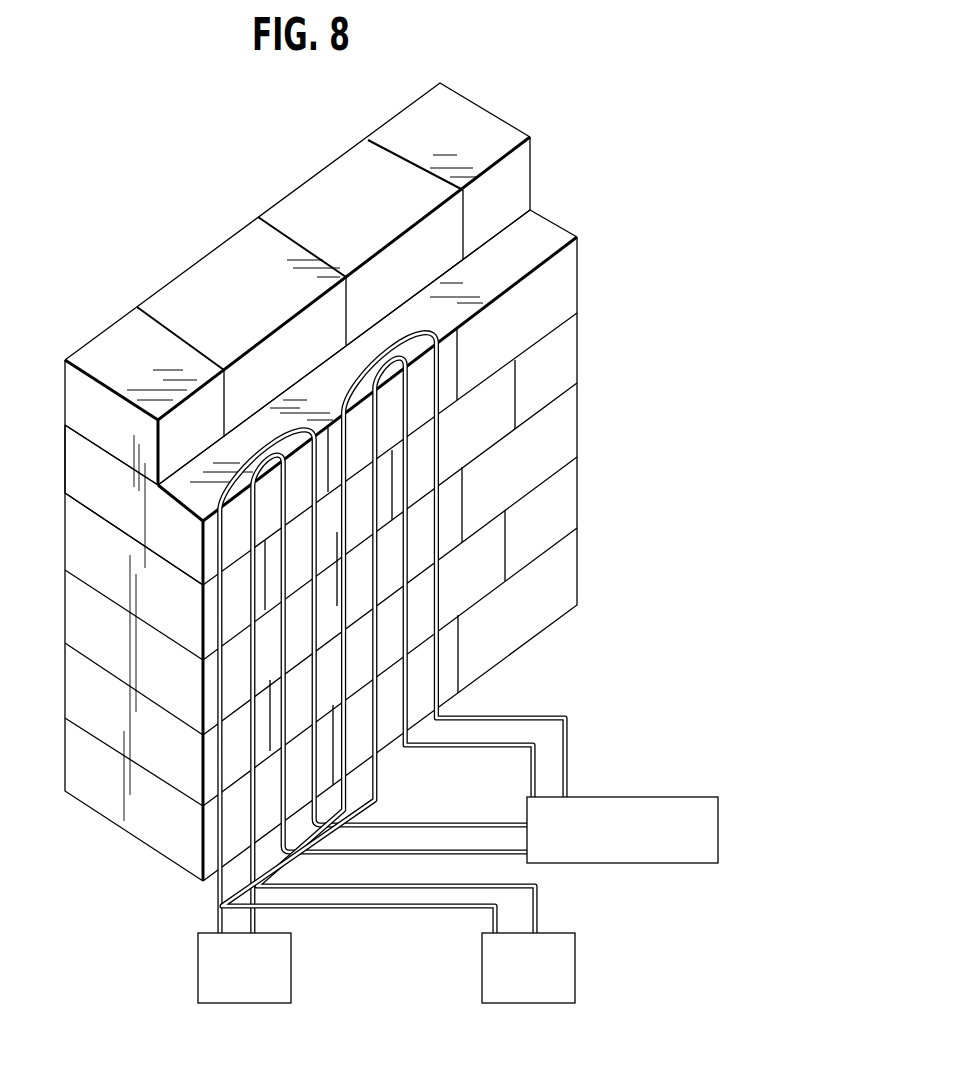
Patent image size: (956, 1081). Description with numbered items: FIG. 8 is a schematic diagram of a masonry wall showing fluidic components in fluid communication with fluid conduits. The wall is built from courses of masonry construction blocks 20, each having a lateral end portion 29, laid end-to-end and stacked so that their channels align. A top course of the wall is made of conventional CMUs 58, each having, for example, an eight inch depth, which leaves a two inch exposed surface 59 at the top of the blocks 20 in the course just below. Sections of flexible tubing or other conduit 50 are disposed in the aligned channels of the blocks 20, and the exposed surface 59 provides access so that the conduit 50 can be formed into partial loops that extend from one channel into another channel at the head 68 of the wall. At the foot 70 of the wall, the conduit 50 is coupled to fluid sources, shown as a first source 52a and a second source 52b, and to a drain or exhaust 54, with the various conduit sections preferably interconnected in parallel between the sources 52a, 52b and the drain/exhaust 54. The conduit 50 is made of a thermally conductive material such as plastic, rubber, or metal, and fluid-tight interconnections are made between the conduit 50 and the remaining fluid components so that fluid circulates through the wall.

The masonry construction block 20 is at (106, 489).
The lateral end portion 29 is at (463, 127).
The conduit 50 is at (224, 484).
The first fluid source 52a is at (198, 960).
The second fluid source 52b is at (575, 968).
The drain or exhaust 54 is at (612, 797).
The conventional CMU 58 is at (90, 408).
The exposed surface 59 is at (535, 231).
The head of the wall 68 is at (338, 261).
The foot of the wall 70 is at (340, 512).